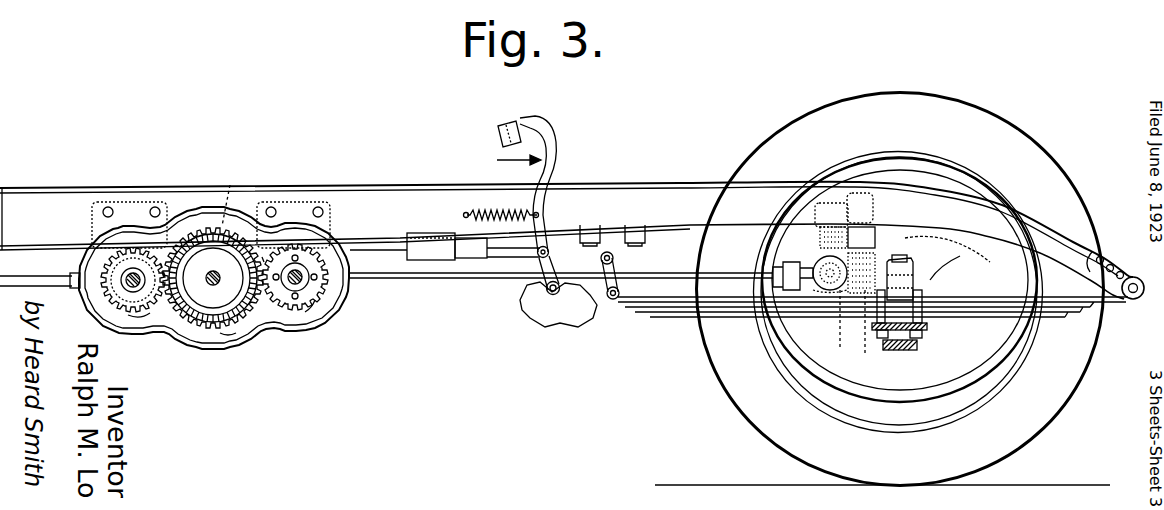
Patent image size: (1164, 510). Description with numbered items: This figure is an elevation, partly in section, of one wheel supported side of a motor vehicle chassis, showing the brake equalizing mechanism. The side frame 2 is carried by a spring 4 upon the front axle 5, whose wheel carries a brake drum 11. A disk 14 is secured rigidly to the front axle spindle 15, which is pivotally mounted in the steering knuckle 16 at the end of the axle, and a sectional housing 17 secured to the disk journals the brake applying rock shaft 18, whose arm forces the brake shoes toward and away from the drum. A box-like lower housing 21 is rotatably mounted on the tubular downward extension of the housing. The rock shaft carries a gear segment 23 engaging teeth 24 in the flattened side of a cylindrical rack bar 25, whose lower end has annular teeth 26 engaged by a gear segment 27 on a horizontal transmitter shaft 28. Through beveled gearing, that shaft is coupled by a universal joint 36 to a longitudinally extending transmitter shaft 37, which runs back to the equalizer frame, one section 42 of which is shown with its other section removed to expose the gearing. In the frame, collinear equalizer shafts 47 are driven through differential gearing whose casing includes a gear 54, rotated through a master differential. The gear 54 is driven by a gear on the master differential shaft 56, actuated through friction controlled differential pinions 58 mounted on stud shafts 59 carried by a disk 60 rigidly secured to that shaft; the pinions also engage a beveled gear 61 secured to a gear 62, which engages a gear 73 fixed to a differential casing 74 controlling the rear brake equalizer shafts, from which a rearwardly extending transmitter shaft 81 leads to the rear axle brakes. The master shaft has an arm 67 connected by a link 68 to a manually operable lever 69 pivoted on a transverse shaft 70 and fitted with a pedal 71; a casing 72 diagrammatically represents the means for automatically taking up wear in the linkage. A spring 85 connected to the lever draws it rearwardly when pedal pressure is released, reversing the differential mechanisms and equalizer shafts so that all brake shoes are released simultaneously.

The side frame 2 is at (638, 192).
The spring 4 is at (1063, 306).
The front axle 5 is at (918, 346).
The brake drum 11 is at (993, 355).
The disk 14 is at (952, 372).
The front axle spindle 15 is at (914, 276).
The steering knuckle 16 is at (958, 258).
The housing 17 is at (900, 250).
The brake applying rock shaft 18 is at (815, 268).
The lower housing 21 is at (910, 260).
The gear segment 23 is at (822, 217).
The teeth 24 is at (876, 237).
The rack bar 25 is at (876, 214).
The annular teeth 26 is at (869, 328).
The gear segment 27 is at (847, 321).
The horizontal transmitter shaft 28 is at (830, 291).
The universal joint 36 is at (775, 268).
The longitudinally extending transmitter shaft 37 is at (670, 272).
The equalizer frame section 42 is at (330, 236).
The equalizer shaft 47 is at (300, 282).
The gear 54 is at (300, 300).
The master differential shaft 56 is at (210, 290).
The differential pinion 58 is at (163, 302).
The stud shaft 59 is at (160, 262).
The disk 60 is at (228, 294).
The beveled gear 61 is at (224, 322).
The gear 62 is at (204, 328).
The arm 67 is at (230, 195).
The link 68 is at (494, 258).
The brake lever 69 is at (552, 170).
The shaft 70 is at (530, 300).
The pedal 71 is at (513, 124).
The casing 72 is at (422, 262).
The gear 73 is at (104, 272).
The differential casing 74 is at (128, 290).
The transmitter shaft 81 is at (40, 283).
The spring 85 is at (483, 210).